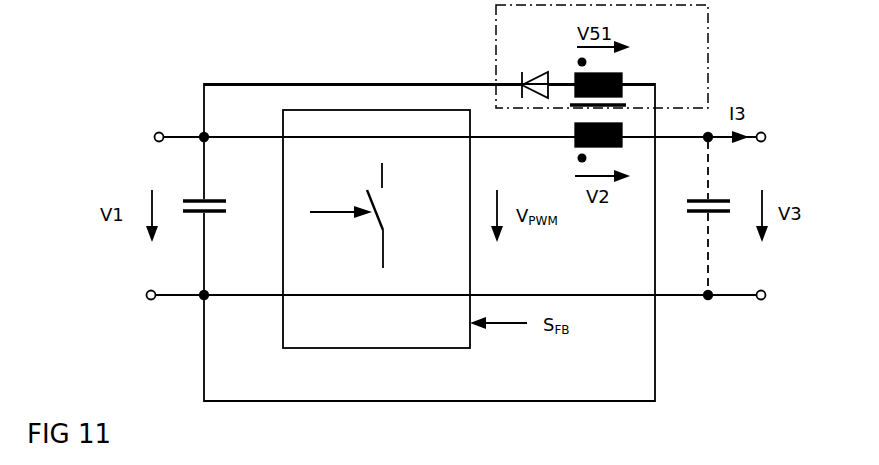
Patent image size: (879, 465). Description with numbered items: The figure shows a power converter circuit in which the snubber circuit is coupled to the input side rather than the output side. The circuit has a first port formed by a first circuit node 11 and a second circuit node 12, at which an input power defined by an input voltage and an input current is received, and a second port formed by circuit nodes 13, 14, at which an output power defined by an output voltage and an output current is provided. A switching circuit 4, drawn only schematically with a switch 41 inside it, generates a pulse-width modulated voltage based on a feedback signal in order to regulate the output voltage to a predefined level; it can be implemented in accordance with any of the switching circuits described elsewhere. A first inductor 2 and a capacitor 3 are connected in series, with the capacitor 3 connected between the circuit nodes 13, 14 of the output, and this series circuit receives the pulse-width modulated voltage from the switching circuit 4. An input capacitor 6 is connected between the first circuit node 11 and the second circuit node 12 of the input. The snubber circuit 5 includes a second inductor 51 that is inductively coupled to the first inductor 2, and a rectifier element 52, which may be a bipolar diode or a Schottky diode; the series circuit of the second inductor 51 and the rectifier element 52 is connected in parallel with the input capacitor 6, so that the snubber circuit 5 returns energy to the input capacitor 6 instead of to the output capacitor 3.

The first inductor 2 is at (562, 151).
The capacitor 3 is at (727, 198).
The switching circuit 4 is at (381, 349).
The snubber circuit 5 is at (708, 62).
The input capacitor 6 is at (228, 198).
The first circuit node 11 is at (142, 135).
The second circuit node 12 is at (138, 297).
The circuit node 13 is at (770, 134).
The circuit node 14 is at (771, 298).
The switch 41 is at (380, 205).
The second inductor 51 is at (628, 72).
The rectifier element 52 is at (540, 70).